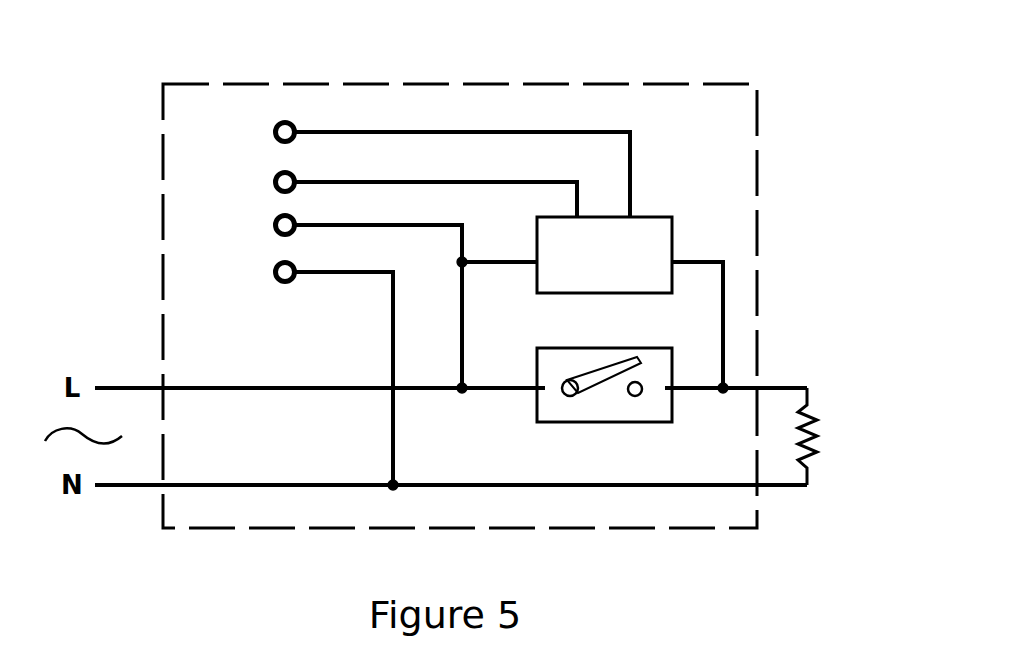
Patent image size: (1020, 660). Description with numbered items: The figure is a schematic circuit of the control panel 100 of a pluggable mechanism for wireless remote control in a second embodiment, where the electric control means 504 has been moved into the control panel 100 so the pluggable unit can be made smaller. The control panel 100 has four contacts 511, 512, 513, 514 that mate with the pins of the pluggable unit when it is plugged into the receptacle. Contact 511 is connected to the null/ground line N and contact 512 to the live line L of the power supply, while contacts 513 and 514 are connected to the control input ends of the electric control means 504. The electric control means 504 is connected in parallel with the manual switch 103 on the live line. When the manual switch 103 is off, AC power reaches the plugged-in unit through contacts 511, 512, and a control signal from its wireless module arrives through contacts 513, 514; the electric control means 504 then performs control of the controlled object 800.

The control panel 100 is at (649, 83).
The manual switch 103 is at (587, 346).
The electric control means 504 is at (650, 217).
The contact 511 is at (301, 371).
The contact 512 is at (336, 299).
The contact 513 is at (393, 192).
The contact 514 is at (420, 167).
The controlled object 800 is at (818, 413).